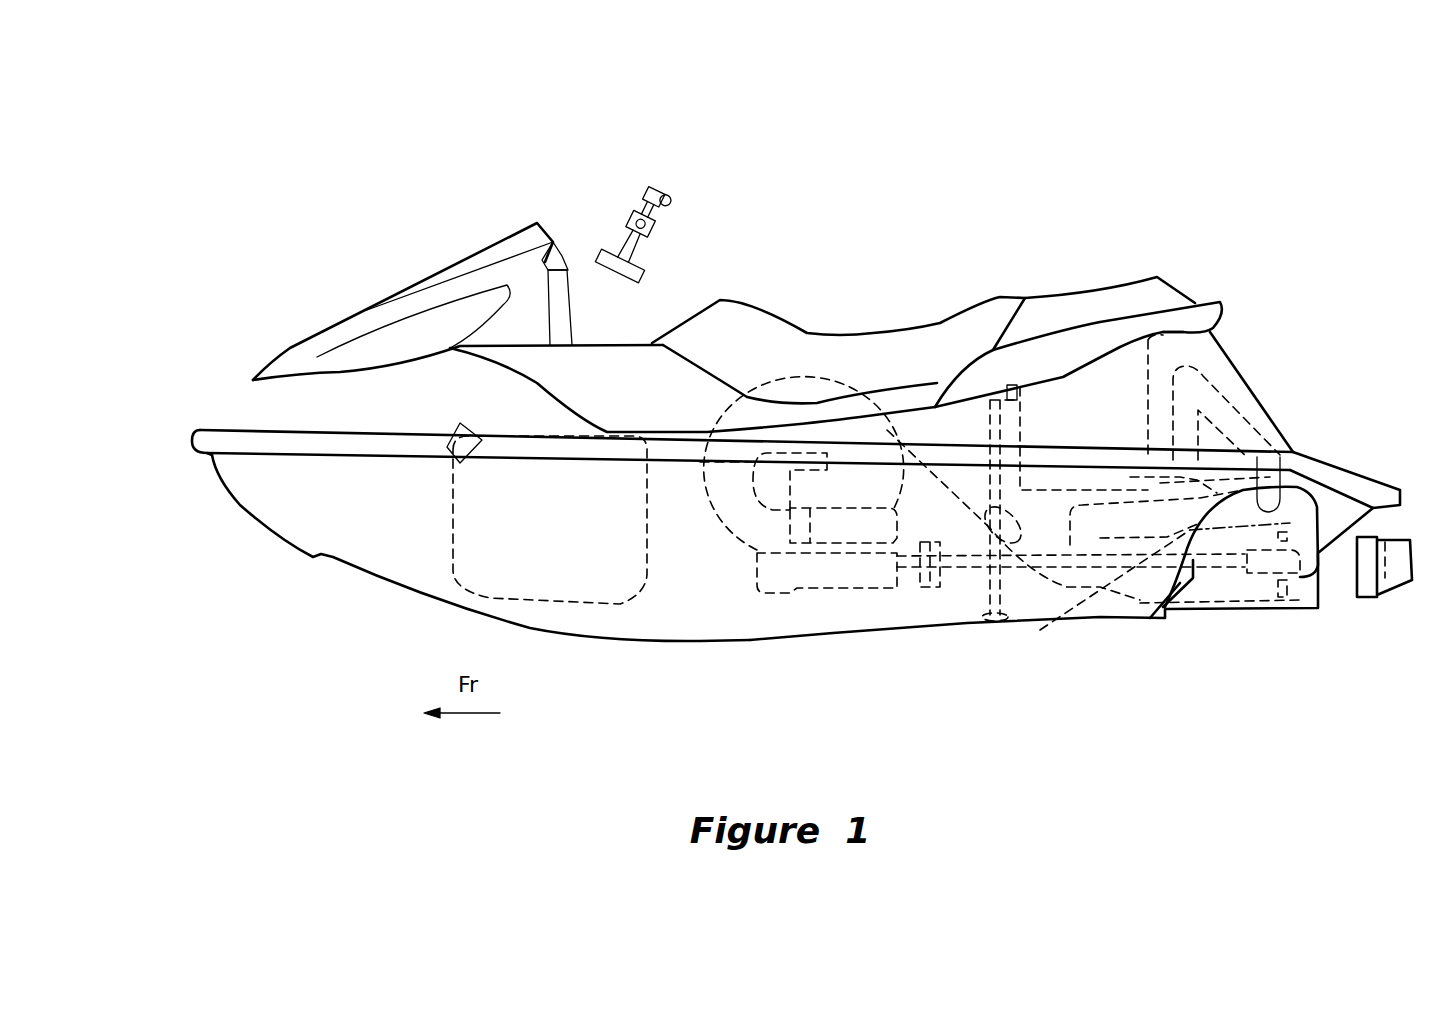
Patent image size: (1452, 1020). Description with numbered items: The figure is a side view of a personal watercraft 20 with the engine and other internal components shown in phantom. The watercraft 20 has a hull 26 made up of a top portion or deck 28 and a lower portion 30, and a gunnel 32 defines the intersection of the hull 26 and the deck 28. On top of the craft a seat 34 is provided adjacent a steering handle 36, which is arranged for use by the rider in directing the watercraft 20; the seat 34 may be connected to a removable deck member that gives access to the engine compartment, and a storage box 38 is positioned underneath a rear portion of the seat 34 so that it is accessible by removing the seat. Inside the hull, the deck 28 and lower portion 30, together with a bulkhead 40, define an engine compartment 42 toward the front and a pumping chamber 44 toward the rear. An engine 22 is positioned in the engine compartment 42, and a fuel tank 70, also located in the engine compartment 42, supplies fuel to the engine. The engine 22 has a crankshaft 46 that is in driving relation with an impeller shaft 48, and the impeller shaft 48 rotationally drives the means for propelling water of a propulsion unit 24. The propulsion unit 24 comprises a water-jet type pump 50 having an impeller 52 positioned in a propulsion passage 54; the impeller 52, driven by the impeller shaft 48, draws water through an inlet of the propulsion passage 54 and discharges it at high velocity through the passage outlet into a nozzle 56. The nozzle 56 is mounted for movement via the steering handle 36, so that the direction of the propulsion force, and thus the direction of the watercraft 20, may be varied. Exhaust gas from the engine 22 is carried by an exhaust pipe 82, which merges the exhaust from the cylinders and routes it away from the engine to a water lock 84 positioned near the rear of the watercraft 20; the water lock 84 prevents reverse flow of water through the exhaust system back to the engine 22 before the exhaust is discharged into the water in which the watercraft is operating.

The watercraft 20 is at (1056, 215).
The engine 22 is at (843, 592).
The propulsion unit 24 is at (1141, 662).
The hull 26 is at (196, 522).
The deck 28 is at (390, 570).
The lower portion 30 is at (250, 407).
The gunnel 32 is at (290, 446).
The seat 34 is at (933, 326).
The steering handle 36 is at (664, 190).
The storage box 38 is at (1150, 362).
The bulkhead 40 is at (1017, 600).
The engine compartment 42 is at (958, 610).
The pumping chamber 44 is at (1052, 615).
The crankshaft 46 is at (905, 590).
The impeller shaft 48 is at (1185, 540).
The water-jet type pump 50 is at (1252, 616).
The impeller 52 is at (1285, 600).
The propulsion passage 54 is at (1310, 600).
The nozzle 56 is at (1400, 573).
The fuel tank 70 is at (650, 555).
The exhaust pipe 82 is at (813, 377).
The water lock 84 is at (1175, 612).